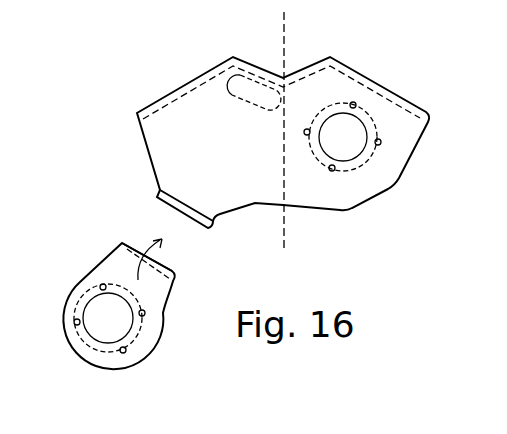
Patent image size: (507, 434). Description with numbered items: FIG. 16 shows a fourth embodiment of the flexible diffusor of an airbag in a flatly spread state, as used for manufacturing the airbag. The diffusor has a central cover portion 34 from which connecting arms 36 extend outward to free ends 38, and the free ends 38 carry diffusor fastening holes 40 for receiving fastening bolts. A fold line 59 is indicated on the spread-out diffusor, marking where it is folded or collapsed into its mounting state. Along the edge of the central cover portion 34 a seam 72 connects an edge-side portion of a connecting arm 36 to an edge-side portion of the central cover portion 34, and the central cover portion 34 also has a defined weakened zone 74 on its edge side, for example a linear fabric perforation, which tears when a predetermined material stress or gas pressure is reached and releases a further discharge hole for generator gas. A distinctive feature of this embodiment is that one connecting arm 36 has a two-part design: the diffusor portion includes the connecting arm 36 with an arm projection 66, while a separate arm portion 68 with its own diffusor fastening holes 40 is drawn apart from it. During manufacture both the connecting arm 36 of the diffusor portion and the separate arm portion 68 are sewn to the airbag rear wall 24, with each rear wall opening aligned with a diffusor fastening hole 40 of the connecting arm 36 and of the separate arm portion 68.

The airbag rear wall 24 is at (345, 419).
The central cover portion 34 is at (307, 153).
The connecting arm 36 is at (122, 220).
The free end 38 is at (404, 132).
The diffusor fastening hole 40 is at (357, 106).
The fold line 59 is at (285, 50).
The arm projection 66 is at (186, 226).
The separate arm portion 68 is at (150, 288).
The seam 72 is at (177, 97).
The weakened zone 74 is at (226, 87).